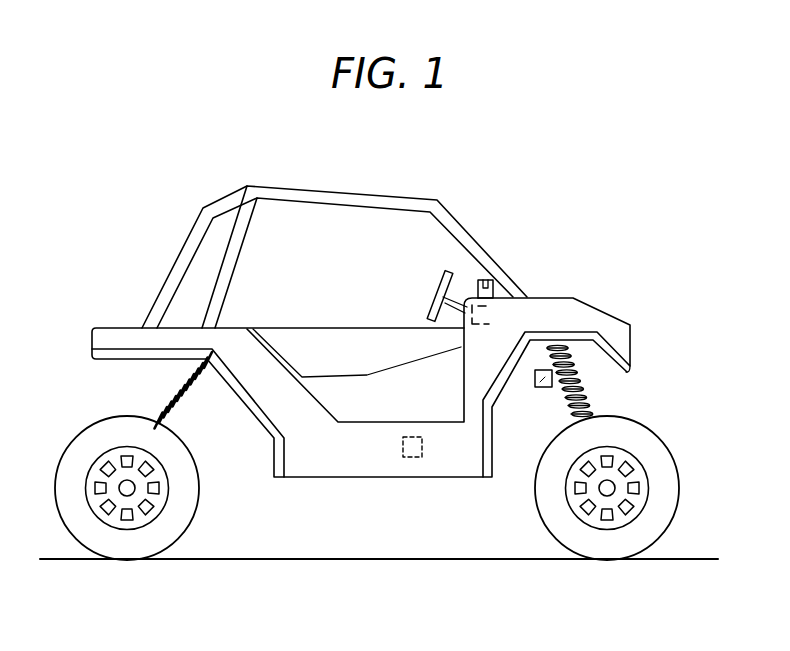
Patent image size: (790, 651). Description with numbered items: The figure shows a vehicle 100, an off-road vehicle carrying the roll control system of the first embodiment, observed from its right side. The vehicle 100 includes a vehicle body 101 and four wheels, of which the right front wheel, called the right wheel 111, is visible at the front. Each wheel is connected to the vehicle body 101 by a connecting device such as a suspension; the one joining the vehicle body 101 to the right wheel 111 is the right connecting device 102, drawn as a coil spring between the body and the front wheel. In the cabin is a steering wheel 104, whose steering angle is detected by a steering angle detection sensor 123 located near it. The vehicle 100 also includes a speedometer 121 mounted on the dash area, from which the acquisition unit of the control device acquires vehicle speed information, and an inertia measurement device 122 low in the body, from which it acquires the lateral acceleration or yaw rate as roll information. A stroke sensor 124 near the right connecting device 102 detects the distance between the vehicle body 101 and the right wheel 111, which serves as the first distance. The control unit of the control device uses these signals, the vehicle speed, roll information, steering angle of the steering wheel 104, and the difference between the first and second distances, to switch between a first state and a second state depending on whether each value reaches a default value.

The vehicle 100 is at (330, 159).
The vehicle body 101 is at (587, 312).
The right connecting device 102 is at (580, 393).
The steering wheel 104 is at (449, 269).
The right wheel 111 is at (656, 527).
The speedometer 121 is at (491, 279).
The inertia measurement device 122 is at (417, 457).
The steering angle detection sensor 123 is at (492, 318).
The stroke sensor 124 is at (538, 389).